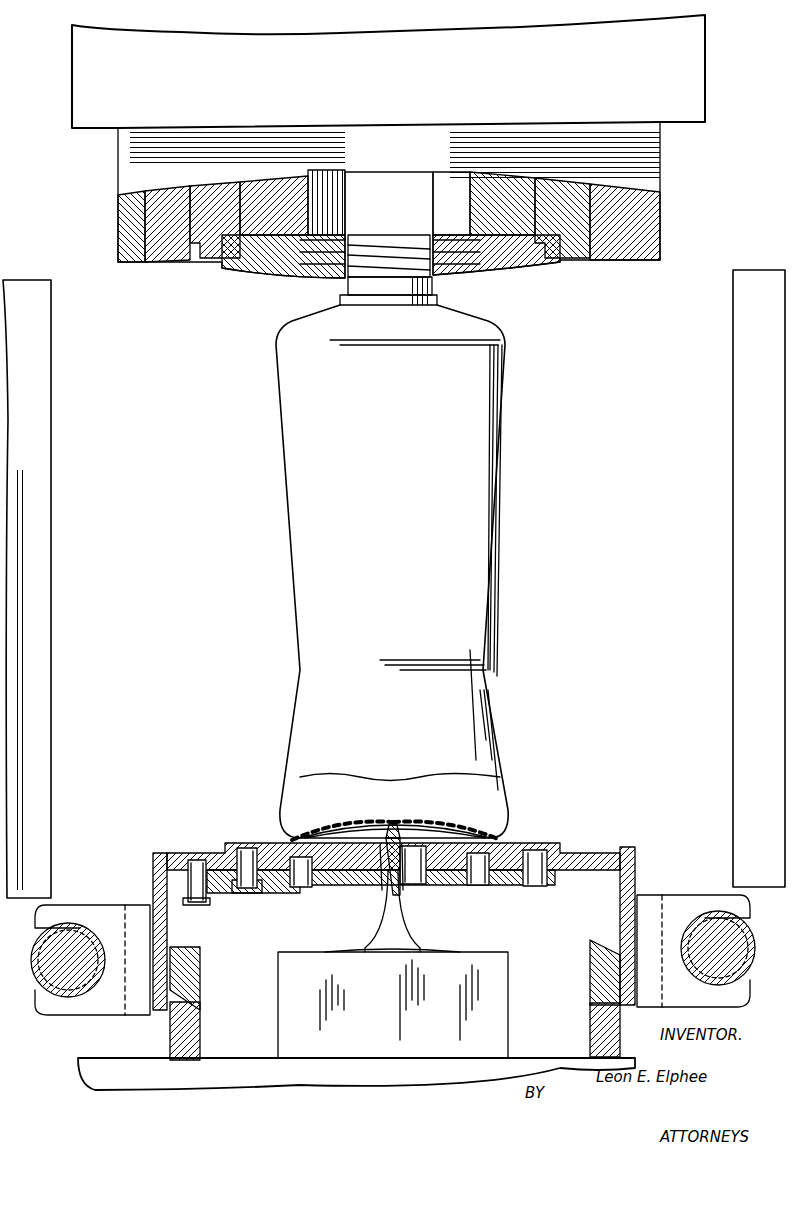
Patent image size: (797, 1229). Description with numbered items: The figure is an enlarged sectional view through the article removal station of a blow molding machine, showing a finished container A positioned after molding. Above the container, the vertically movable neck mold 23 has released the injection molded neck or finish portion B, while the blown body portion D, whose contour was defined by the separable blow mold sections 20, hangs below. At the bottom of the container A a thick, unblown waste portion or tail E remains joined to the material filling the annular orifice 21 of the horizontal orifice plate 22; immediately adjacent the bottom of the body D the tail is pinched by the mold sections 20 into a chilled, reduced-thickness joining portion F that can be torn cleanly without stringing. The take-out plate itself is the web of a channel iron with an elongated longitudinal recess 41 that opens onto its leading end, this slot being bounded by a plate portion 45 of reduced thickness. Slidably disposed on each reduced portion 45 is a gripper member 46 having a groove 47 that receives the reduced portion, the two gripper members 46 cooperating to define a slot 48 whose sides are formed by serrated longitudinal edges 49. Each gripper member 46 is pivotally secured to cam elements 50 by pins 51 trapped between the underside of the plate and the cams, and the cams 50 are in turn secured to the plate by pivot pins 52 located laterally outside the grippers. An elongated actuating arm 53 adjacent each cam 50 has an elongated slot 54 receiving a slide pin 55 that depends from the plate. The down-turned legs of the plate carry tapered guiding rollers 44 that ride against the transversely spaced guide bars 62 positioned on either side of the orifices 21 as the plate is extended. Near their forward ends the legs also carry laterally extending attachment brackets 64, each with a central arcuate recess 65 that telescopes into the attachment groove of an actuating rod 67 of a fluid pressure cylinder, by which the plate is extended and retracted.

The blow mold sections 20 is at (48, 510).
The annular orifice 21 is at (402, 952).
The orifice plate 22 is at (502, 967).
The neck mold 23 is at (515, 276).
The recess 41 is at (362, 872).
The guiding rollers 44 is at (200, 968).
The plate portion of reduced thickness 45 is at (357, 830).
The gripper member 46 is at (418, 866).
The groove 47 is at (440, 830).
The slot 48 is at (403, 872).
The serrated longitudinal edges 49 is at (385, 878).
The cam element 50 is at (284, 884).
The pin 51 is at (300, 888).
The pivot pin 52 is at (248, 880).
The actuating arm 53 is at (213, 895).
The elongated slot 54 is at (190, 900).
The slide pin 55 is at (197, 903).
The guide bar 62 is at (200, 1035).
The attachment bracket 64 is at (112, 910).
The arcuate recess 65 is at (72, 925).
The actuating rod 67 is at (45, 968).
The container A is at (500, 440).
The neck B is at (340, 287).
The body portion D is at (490, 535).
The waste portion E is at (385, 890).
The joining portion F is at (398, 826).